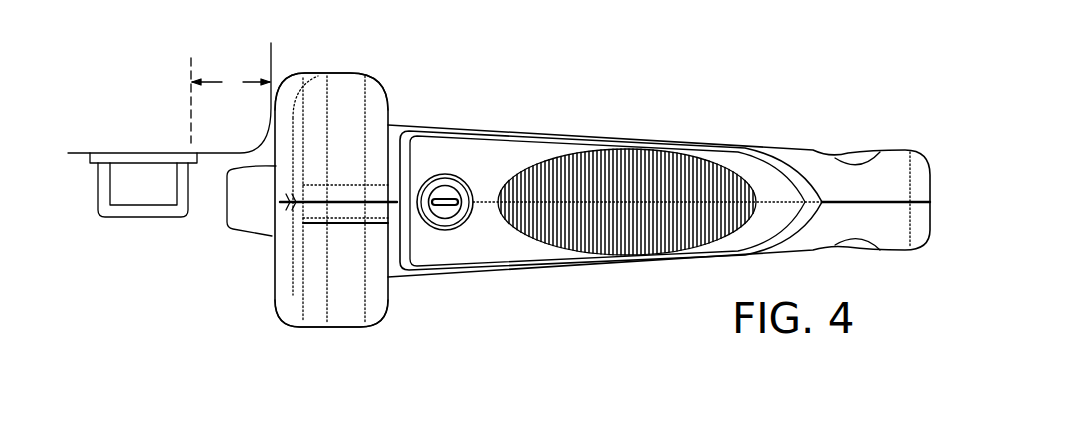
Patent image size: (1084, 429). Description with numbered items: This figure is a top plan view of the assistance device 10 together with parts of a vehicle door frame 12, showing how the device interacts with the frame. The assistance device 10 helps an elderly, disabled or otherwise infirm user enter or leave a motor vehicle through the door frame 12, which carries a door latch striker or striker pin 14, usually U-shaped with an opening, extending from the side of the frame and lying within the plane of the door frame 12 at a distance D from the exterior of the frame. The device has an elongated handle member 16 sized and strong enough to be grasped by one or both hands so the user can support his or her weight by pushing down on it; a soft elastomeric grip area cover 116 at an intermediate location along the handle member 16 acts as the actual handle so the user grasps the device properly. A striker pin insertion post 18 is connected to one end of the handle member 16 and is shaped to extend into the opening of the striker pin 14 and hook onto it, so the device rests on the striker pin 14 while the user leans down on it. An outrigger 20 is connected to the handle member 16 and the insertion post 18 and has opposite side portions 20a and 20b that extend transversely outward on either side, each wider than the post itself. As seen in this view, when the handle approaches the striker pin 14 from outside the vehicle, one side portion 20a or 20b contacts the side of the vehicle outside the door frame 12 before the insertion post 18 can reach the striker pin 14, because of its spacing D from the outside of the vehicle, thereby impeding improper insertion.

The assistance device 10 is at (430, 108).
The door frame 12 is at (212, 150).
The striker pin 14 is at (152, 212).
The handle member 16 is at (595, 147).
The striker pin insertion post 18 is at (247, 224).
The outrigger 20 is at (343, 329).
The side portion 20a is at (367, 85).
The side portion 20b is at (370, 307).
The grip area cover 116 is at (659, 164).